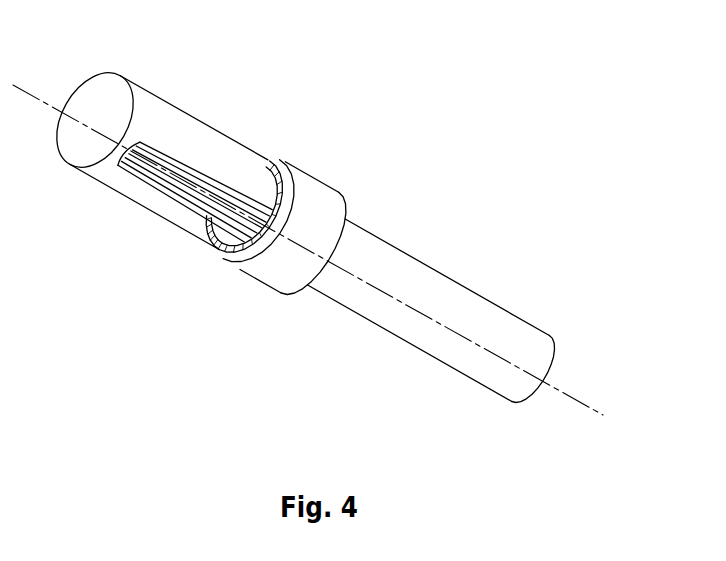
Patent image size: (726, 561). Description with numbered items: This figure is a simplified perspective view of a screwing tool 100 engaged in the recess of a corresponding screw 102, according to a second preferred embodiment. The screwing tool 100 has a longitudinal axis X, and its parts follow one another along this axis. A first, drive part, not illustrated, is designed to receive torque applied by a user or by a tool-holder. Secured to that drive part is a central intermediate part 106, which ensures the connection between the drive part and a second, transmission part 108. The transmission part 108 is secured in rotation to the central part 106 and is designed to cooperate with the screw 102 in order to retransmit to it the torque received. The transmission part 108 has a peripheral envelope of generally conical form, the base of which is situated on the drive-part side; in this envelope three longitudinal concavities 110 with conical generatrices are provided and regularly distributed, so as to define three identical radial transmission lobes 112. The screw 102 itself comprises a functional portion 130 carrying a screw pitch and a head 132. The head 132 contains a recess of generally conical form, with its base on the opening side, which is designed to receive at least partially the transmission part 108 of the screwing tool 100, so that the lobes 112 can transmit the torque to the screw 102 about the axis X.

The screwing tool 100 is at (331, 223).
The screw 102 is at (397, 272).
The central intermediate part 106 is at (143, 103).
The second, transmission part 108 is at (293, 168).
The longitudinal concavities 110 is at (206, 213).
The radial transmission lobes 112 is at (242, 250).
The functional portion 130 is at (492, 320).
The head 132 is at (328, 210).
The longitudinal axis X is at (586, 401).